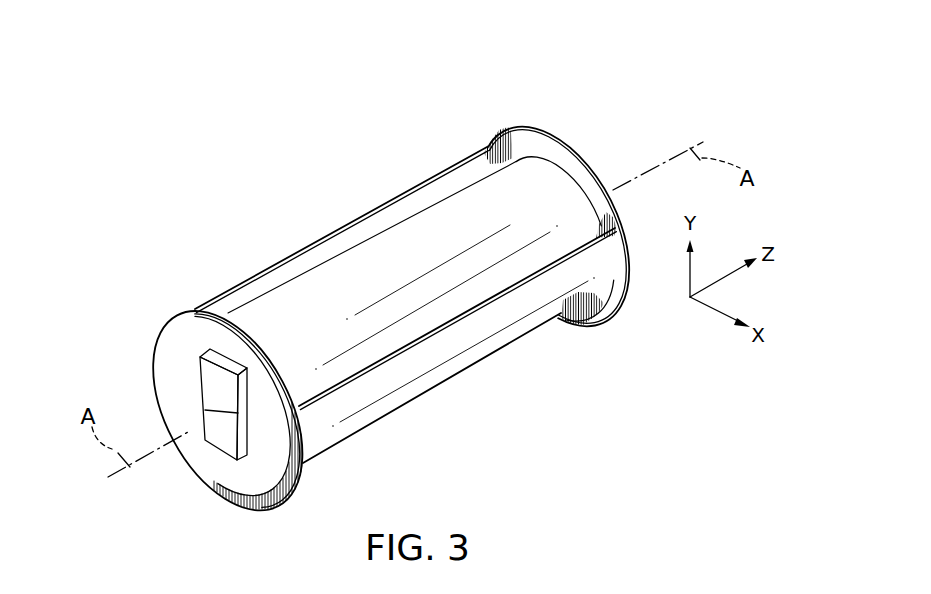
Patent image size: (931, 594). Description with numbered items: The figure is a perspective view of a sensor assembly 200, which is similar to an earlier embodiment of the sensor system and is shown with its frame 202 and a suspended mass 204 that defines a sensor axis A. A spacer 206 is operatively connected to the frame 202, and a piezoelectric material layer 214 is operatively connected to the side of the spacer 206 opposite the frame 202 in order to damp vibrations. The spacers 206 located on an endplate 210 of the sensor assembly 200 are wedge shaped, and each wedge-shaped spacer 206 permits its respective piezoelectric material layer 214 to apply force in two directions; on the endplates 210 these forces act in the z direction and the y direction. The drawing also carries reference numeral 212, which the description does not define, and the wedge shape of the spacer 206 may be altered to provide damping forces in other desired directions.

The sensor assembly 200 is at (702, 80).
The frame 202 is at (195, 296).
The suspended mass 204 is at (441, 220).
The spacer 206 is at (245, 357).
The endplate 210 is at (583, 157).
The slot edge 212 is at (369, 215).
The piezoelectric material layer 214 is at (212, 379).